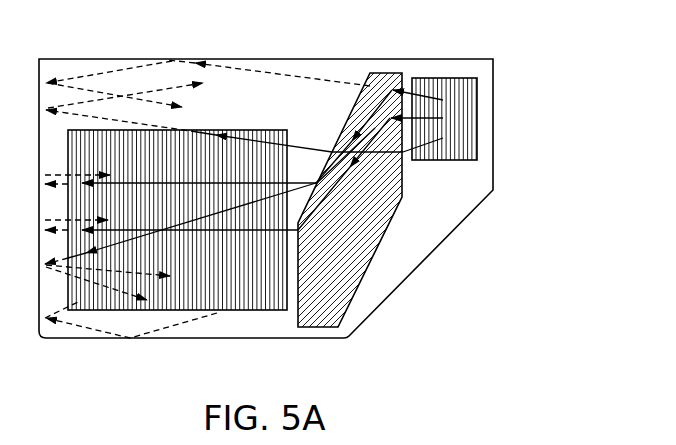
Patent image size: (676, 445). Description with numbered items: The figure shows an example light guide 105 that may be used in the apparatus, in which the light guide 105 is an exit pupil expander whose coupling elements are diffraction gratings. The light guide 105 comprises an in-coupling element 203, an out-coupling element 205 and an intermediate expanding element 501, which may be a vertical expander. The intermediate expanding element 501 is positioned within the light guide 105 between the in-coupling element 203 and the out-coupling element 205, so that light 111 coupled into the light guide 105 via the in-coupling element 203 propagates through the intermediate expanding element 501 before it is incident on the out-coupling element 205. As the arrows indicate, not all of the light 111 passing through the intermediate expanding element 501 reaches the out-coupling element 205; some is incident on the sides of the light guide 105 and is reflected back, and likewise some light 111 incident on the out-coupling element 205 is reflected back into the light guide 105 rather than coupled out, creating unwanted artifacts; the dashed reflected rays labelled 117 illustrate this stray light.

The light guide 105 is at (442, 58).
The light 111 is at (403, 152).
The reflected light rays 117 is at (298, 74).
The in-coupling element 203 is at (478, 128).
The out-coupling element 205 is at (253, 312).
The intermediate expanding element 501 is at (360, 287).